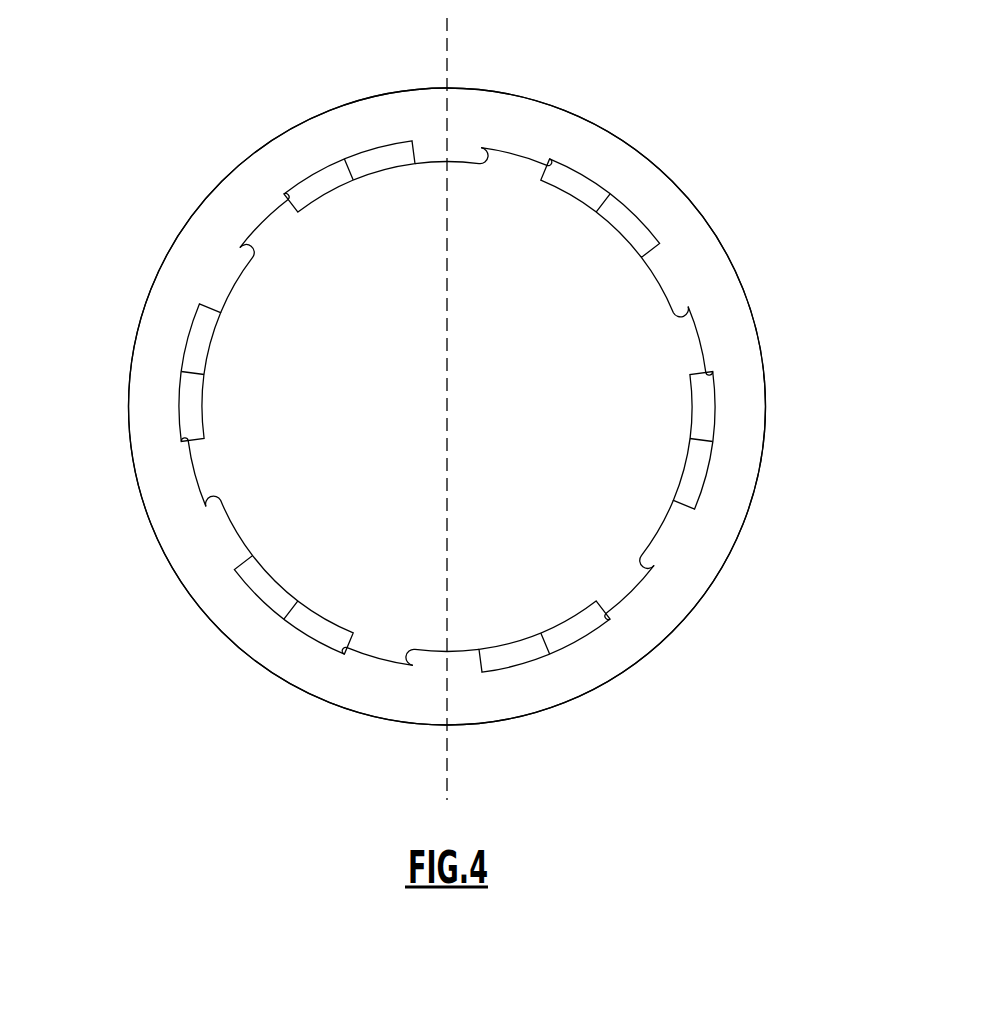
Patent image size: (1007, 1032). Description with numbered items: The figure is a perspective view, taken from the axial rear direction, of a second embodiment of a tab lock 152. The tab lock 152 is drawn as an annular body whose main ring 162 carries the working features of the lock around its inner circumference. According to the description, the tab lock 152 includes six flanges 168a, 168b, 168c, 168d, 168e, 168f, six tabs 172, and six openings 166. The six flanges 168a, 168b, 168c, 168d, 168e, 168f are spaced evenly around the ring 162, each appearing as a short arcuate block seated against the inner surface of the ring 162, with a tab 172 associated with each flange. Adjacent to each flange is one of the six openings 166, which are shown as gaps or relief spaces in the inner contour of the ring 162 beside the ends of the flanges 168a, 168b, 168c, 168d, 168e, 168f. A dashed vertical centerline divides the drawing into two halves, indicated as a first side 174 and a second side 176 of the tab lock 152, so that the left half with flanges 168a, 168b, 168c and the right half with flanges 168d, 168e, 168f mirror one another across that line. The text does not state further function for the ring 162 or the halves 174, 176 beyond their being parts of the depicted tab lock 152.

The tab lock 152 is at (679, 708).
The ring 162 is at (193, 262).
The opening 166 is at (521, 152).
The flange 168a is at (365, 153).
The flange 168b is at (195, 362).
The flange 168c is at (260, 580).
The flange 168d is at (643, 235).
The flange 168e is at (700, 475).
The flange 168f is at (523, 658).
The tab 172 is at (592, 188).
The first half 174 is at (240, 97).
The second half 176 is at (633, 84).